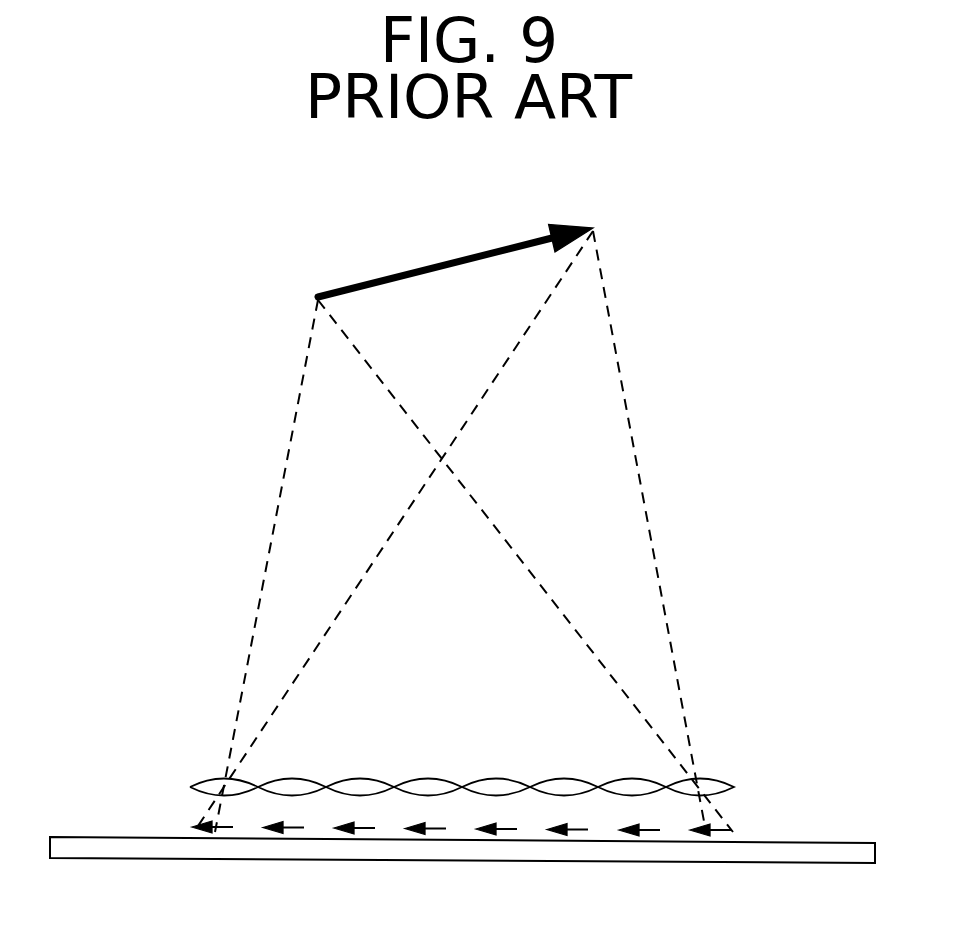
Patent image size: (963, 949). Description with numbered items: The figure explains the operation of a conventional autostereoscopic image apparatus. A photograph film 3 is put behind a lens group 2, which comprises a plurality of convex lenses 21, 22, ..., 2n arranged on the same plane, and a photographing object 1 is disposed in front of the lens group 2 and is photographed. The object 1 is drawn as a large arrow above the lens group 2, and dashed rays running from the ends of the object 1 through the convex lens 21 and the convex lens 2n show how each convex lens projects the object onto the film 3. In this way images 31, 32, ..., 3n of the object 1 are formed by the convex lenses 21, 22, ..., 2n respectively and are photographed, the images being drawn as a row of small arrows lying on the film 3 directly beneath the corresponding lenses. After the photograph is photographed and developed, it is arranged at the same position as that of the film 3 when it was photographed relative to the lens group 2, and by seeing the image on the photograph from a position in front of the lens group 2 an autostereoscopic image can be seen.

The photographing object 1 is at (438, 262).
The lens group 2 is at (462, 731).
The convex lens 21 is at (207, 785).
The convex lens 22 is at (297, 787).
The convex lens 2n is at (715, 783).
The photograph film 3 is at (467, 850).
The image 31 is at (206, 834).
The image 32 is at (283, 837).
The image 3n is at (727, 832).